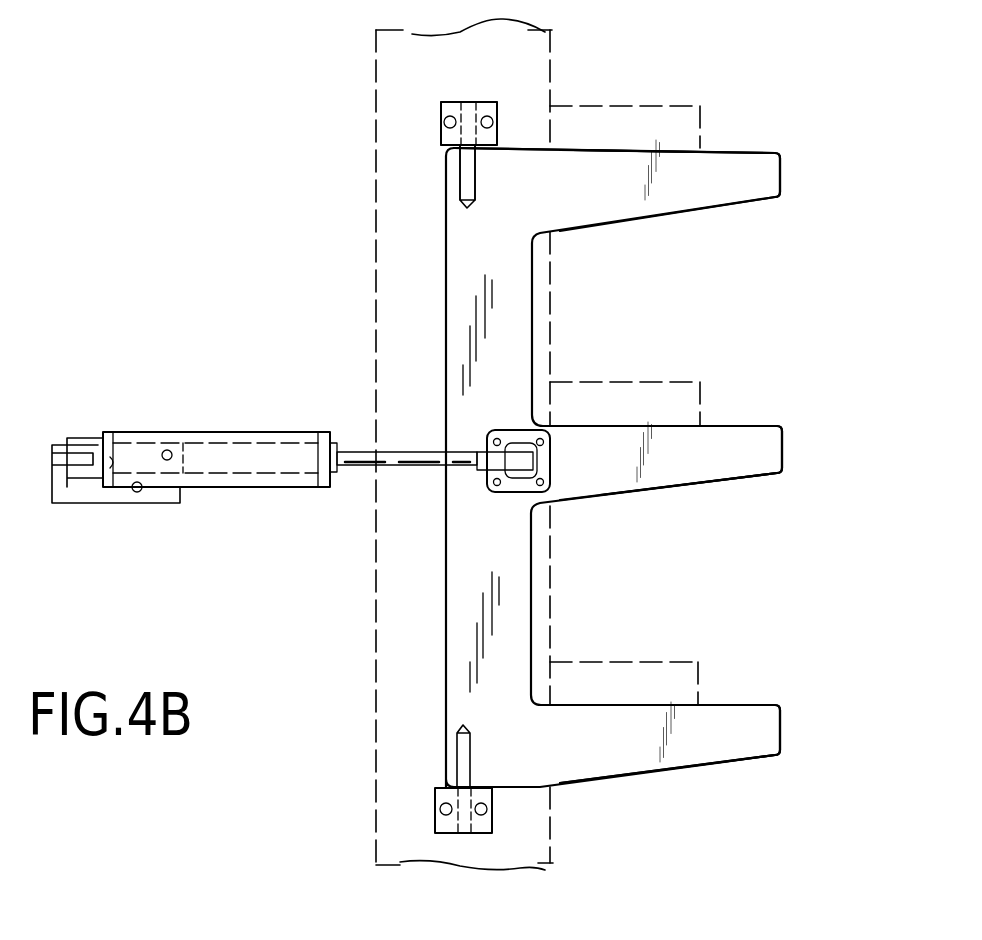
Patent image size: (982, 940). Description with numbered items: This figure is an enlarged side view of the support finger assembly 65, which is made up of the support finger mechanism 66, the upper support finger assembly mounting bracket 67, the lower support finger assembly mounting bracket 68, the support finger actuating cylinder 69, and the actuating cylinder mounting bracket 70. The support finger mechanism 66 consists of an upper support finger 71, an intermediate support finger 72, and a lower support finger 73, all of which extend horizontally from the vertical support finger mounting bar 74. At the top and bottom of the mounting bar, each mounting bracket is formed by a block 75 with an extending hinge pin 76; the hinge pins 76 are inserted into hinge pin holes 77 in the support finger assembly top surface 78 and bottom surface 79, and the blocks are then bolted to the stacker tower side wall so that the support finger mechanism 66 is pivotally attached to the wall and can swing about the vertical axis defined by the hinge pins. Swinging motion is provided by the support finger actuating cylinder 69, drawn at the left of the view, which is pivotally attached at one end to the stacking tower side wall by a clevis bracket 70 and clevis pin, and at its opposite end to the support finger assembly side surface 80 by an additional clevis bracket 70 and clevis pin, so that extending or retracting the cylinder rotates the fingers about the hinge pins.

The support finger assembly 65 is at (258, 260).
The support finger mechanism 66 is at (733, 427).
The upper support finger assembly mounting bracket 67 is at (498, 115).
The lower support finger assembly mounting bracket 68 is at (494, 817).
The support finger actuating cylinder 69 is at (240, 488).
The actuating cylinder mounting bracket 70 is at (80, 503).
The upper support finger 71 is at (780, 175).
The intermediate support finger 72 is at (782, 447).
The lower support finger 73 is at (780, 728).
The support finger mounting bar 74 is at (460, 635).
The block 75 is at (457, 101).
The hinge pin 76 is at (460, 172).
The hinge pin hole 77 is at (476, 186).
The support finger assembly top surface 78 is at (524, 146).
The support finger assembly bottom surface 79 is at (630, 776).
The support finger assembly side surface 80 is at (688, 476).